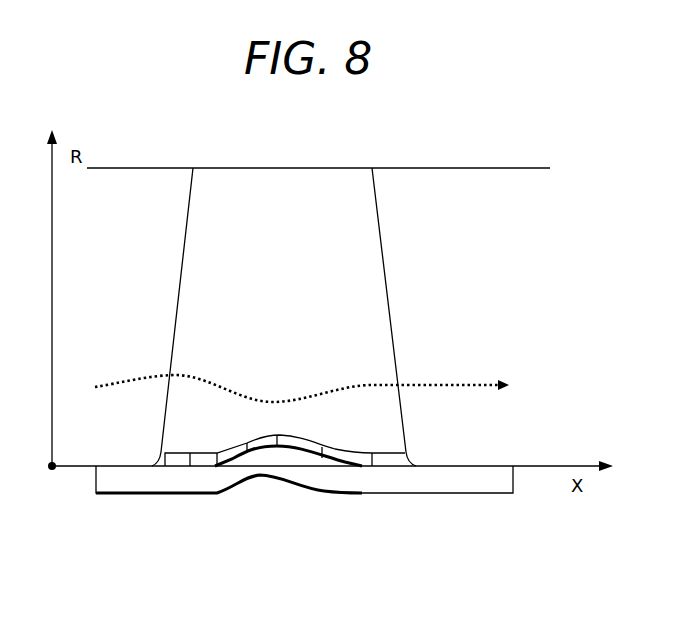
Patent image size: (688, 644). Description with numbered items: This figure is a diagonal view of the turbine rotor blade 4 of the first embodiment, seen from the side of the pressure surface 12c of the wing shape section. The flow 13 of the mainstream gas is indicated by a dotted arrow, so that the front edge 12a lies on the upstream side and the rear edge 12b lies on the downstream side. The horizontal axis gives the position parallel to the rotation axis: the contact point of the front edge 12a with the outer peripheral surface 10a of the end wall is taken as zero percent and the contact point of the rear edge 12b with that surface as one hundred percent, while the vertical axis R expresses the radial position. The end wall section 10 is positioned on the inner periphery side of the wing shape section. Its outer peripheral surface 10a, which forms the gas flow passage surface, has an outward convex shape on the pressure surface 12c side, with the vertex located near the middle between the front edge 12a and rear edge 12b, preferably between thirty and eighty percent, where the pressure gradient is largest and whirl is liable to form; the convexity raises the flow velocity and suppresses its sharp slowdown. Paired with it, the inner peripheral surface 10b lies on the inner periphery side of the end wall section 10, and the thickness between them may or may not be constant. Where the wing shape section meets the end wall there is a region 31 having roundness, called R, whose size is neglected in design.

The rotor blade 4 is at (383, 263).
The front edge 12a is at (164, 317).
The rear edge 12b is at (403, 317).
The pressure surface 12c is at (293, 255).
The flow of the mainstream gas 13 is at (302, 384).
The end wall section 10 is at (273, 460).
The outer peripheral surface of the end wall section 10a is at (120, 465).
The inner peripheral surface of the end wall section 10b is at (158, 493).
The region having roundness 31 is at (390, 455).